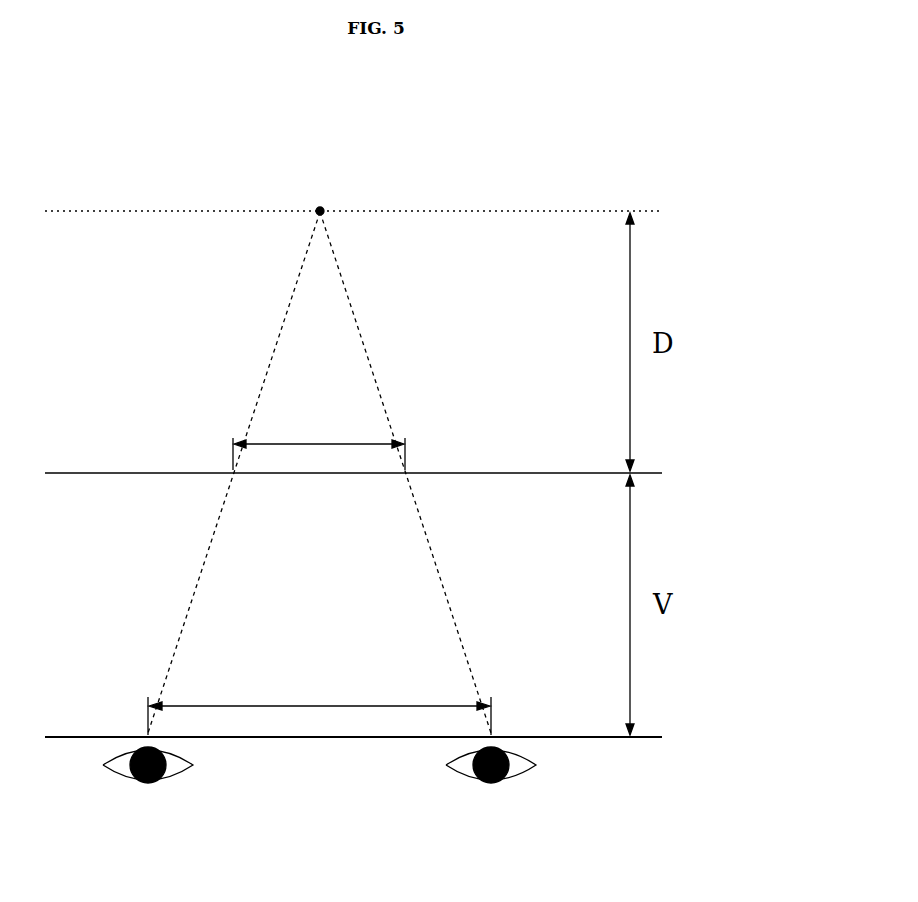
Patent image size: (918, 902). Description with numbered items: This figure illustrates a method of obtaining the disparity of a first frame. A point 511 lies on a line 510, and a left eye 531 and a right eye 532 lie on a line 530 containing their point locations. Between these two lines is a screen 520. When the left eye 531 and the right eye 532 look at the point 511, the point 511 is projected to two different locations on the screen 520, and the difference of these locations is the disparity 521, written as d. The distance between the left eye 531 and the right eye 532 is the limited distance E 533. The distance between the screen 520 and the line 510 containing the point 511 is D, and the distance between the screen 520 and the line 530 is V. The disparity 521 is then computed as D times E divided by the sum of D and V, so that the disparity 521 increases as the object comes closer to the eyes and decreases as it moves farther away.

The line containing the point 510 is at (652, 210).
The point 511 is at (320, 208).
The screen 520 is at (652, 472).
The disparity 521 is at (320, 447).
The line containing the point locations of the left eye and the right eye 530 is at (652, 735).
The left eye 531 is at (147, 790).
The right eye 532 is at (489, 790).
The distance between the left eye and the right eye 533 is at (320, 708).